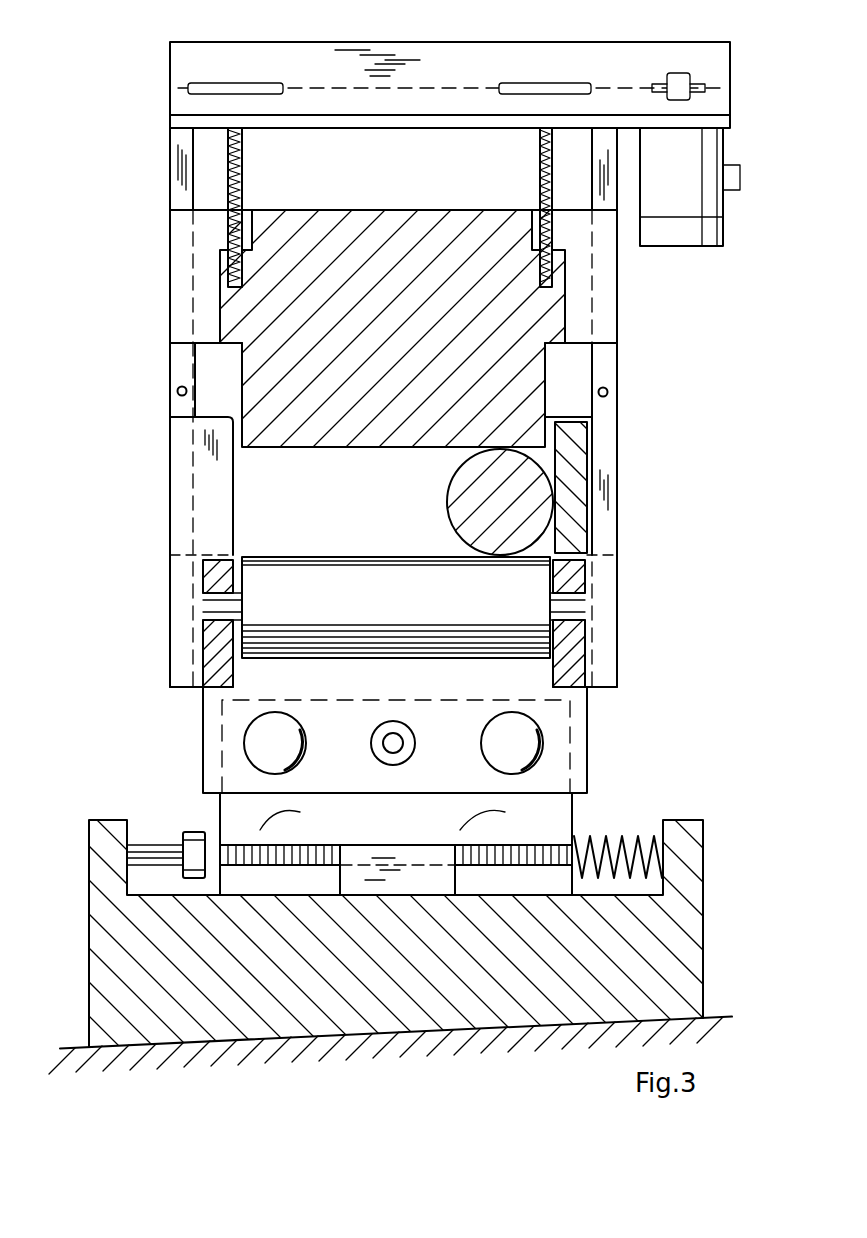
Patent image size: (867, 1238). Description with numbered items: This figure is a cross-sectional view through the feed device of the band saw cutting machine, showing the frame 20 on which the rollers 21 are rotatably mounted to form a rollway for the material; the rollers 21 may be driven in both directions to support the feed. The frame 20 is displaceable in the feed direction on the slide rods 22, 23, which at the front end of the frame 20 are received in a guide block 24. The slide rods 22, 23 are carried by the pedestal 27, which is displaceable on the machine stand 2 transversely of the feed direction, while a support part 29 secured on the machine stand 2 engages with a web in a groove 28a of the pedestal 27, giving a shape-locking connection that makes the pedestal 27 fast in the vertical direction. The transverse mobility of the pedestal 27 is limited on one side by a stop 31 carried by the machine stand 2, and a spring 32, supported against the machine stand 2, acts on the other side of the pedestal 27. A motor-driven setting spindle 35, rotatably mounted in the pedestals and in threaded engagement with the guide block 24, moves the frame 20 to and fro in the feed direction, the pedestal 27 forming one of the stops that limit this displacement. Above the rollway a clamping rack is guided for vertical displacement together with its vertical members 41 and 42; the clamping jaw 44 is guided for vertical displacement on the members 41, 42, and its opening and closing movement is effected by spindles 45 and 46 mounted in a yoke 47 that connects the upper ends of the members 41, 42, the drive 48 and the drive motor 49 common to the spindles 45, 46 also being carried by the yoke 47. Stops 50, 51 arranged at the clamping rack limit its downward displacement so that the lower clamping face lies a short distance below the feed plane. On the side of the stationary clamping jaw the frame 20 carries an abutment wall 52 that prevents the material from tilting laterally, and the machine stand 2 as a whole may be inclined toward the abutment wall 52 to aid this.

The machine stand 2 is at (180, 1030).
The frame 20 is at (212, 653).
The rollers 21 is at (542, 635).
The slide rod 22 is at (283, 745).
The slide rod 23 is at (527, 734).
The guide block 24 is at (455, 727).
The pedestal 27 is at (545, 812).
The groove 28a is at (222, 838).
The support part 29 is at (367, 850).
The stop 31 is at (183, 838).
The spring 32 is at (622, 840).
The setting spindle 35 is at (393, 720).
The vertical member 41 is at (180, 178).
The vertical member 42 is at (608, 197).
The clamping jaw 44 is at (557, 326).
The spindle 45 is at (232, 236).
The spindle 46 is at (538, 165).
The yoke 47 is at (330, 55).
The drive 48 is at (470, 88).
The drive motor 49 is at (697, 150).
The stop 50 is at (177, 390).
The stop 51 is at (608, 391).
The abutment wall 52 is at (577, 507).